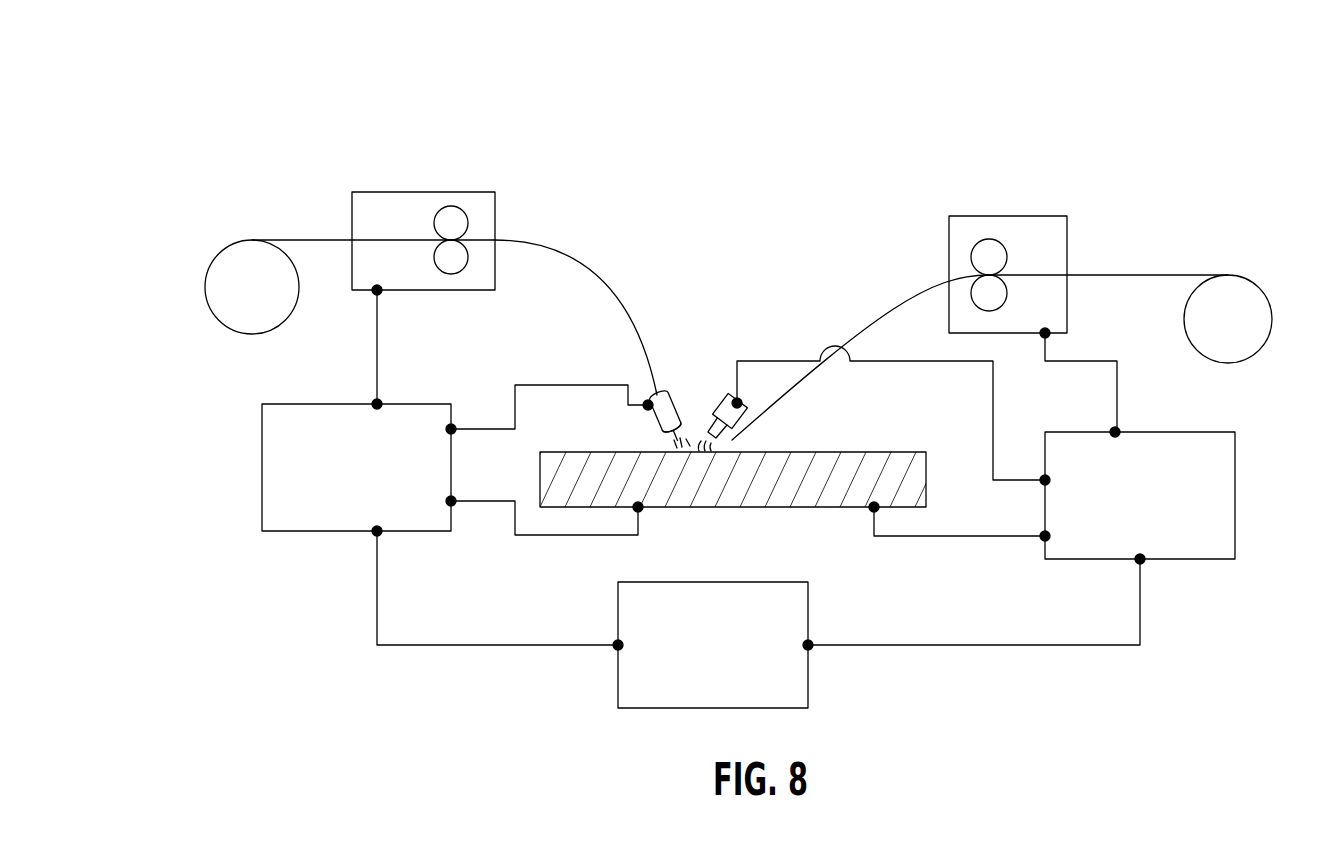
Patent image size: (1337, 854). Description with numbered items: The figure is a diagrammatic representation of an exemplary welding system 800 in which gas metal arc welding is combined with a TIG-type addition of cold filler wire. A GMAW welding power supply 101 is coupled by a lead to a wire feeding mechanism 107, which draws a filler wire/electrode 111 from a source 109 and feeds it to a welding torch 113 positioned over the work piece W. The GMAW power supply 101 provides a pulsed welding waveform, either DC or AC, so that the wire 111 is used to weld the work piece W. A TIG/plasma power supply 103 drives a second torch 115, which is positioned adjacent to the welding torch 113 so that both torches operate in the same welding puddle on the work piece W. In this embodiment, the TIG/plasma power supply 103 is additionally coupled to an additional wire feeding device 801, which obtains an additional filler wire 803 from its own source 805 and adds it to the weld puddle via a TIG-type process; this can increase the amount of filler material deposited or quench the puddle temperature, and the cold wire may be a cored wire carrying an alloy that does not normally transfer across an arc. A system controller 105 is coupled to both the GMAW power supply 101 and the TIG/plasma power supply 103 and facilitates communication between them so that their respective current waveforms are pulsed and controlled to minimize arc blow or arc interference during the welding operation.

The welding system 800 is at (880, 111).
The GMAW welding power supply 101 is at (311, 531).
The TIG/plasma power supply 103 is at (1235, 482).
The system controller 105 is at (808, 680).
The wire feeding mechanism 107 is at (413, 192).
The source 109 is at (240, 239).
The filler wire/electrode 111 is at (590, 270).
The welding torch 113 is at (675, 398).
The torch 115 is at (727, 400).
The additional wire feeding device 801 is at (1067, 225).
The additional filler wire 803 is at (890, 313).
The source 805 is at (1237, 275).
The work piece W is at (847, 453).